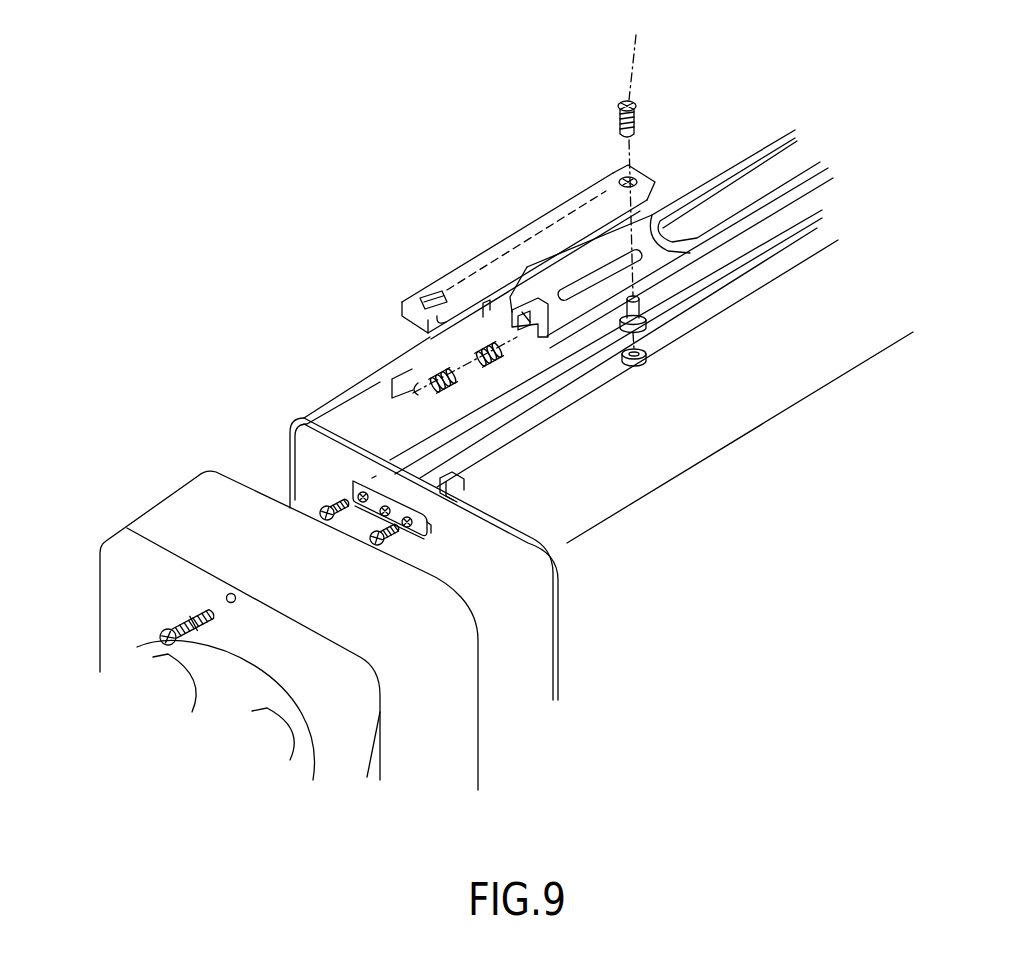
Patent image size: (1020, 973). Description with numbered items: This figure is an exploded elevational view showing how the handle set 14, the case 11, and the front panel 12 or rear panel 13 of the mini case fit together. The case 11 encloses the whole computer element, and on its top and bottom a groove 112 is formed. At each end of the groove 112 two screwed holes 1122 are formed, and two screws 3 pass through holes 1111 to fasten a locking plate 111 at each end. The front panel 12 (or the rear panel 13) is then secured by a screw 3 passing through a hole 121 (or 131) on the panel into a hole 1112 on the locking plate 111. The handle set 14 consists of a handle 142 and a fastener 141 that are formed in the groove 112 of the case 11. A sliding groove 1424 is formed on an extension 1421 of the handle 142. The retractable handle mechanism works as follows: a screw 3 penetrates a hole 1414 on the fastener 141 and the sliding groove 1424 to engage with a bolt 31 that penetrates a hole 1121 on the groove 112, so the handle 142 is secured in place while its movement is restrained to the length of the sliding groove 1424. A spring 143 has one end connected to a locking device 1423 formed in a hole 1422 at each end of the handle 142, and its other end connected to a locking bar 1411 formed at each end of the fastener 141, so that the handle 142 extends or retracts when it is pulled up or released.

The screw 3 is at (55, 593).
The case 11 is at (673, 618).
The front panel 12 is at (250, 608).
The rear panel 13 is at (117, 537).
The handle set 14 is at (570, 205).
The bolt 31 is at (648, 316).
The locking plate 111 is at (425, 530).
The groove 112 is at (498, 437).
The hole 121 is at (206, 553).
The hole 131 is at (228, 593).
The fastener 141 is at (501, 214).
The handle 142 is at (740, 180).
The spring 143 is at (437, 397).
The holes 1111 is at (357, 488).
The hole 1112 is at (387, 497).
The hole 1121 is at (647, 357).
The screwed holes 1122 is at (455, 496).
The locking bar 1411 is at (400, 300).
The hole 1414 is at (637, 178).
The extension 1421 is at (627, 241).
The hole 1422 is at (530, 317).
The locking device 1423 is at (531, 331).
The sliding groove 1424 is at (578, 290).